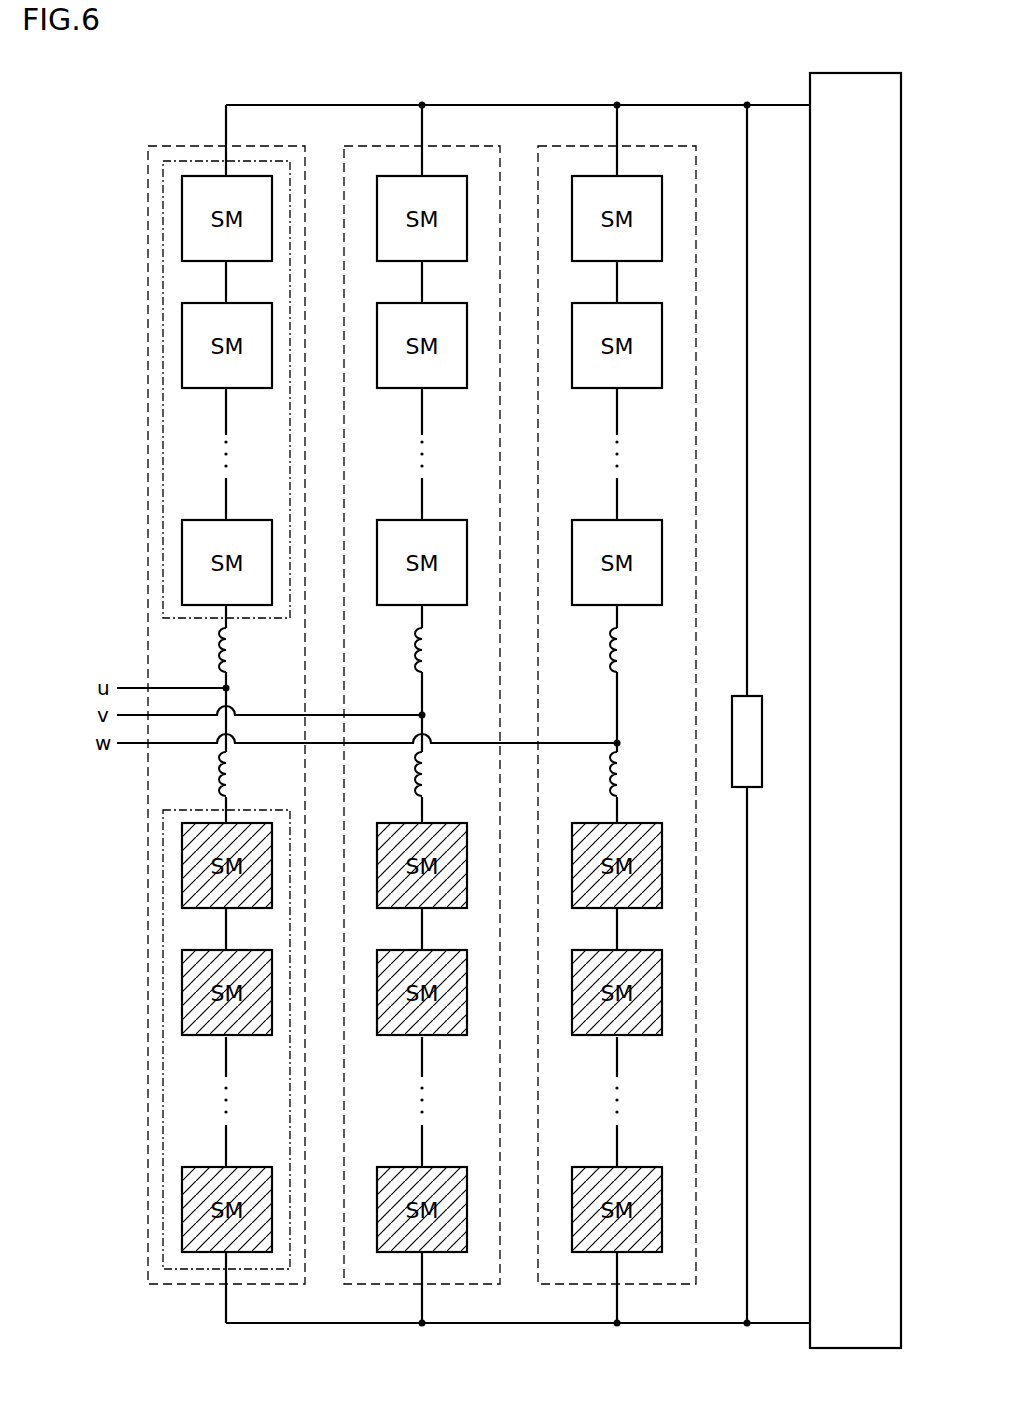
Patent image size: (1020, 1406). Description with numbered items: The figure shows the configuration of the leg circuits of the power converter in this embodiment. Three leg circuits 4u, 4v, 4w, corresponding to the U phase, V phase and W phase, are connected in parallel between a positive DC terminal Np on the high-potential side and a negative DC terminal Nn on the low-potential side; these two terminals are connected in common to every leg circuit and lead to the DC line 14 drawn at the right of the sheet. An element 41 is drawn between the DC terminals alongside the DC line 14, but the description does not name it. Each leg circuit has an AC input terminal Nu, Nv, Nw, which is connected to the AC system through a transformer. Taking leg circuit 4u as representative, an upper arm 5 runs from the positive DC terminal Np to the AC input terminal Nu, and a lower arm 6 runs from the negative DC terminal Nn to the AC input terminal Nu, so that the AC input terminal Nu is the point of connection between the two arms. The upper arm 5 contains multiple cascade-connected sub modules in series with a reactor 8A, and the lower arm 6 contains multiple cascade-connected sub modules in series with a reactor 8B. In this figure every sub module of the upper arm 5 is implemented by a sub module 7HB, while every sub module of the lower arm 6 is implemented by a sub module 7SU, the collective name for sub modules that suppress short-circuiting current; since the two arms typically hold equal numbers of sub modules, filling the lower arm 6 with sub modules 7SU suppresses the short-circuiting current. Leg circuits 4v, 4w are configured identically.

The DC line 14 is at (848, 73).
The resistor 41 is at (752, 696).
The leg circuit 4u is at (262, 146).
The leg circuit 4v is at (457, 146).
The leg circuit 4w is at (652, 146).
The upper arm 5 is at (178, 618).
The lower arm 6 is at (178, 810).
The sub module 7HB is at (182, 222).
The sub module 7SU is at (182, 866).
The reactor 8A is at (230, 652).
The reactor 8B is at (230, 777).
The positive DC terminal Np is at (422, 105).
The negative DC terminal Nn is at (422, 1323).
The AC input terminal Nu is at (229, 688).
The AC input terminal Nv is at (424, 713).
The AC input terminal Nw is at (619, 741).